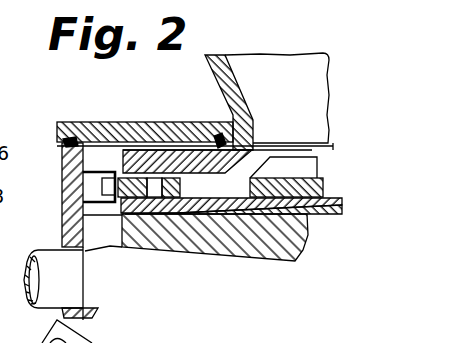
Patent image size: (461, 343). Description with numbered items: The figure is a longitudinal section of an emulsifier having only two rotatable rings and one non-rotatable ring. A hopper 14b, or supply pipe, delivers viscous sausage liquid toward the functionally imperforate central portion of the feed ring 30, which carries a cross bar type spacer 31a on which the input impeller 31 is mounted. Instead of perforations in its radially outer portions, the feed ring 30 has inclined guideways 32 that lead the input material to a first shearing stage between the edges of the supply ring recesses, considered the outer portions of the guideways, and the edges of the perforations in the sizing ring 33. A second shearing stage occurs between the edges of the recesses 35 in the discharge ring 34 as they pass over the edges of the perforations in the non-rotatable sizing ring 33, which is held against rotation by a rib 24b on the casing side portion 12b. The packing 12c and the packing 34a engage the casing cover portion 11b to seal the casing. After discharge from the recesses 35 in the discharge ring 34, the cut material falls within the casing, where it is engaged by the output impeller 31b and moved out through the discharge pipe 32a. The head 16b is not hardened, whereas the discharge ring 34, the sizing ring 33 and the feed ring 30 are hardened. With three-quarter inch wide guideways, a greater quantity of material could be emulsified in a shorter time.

The casing cover portion 11b is at (133, 133).
The hopper 14b is at (235, 78).
The packing 34a is at (219, 138).
The packing 12c is at (63, 141).
The casing side portion 12b is at (72, 229).
The sizing ring 33 is at (97, 189).
The rib 24b is at (97, 174).
The recesses 35 is at (119, 170).
The discharge ring 34 is at (180, 157).
The inclined guideways 32 is at (182, 199).
The feed ring 30 is at (332, 214).
The head 16b is at (261, 238).
The output impeller 31b is at (110, 228).
The input impeller 31 is at (307, 163).
The cross bar type spacer 31a is at (300, 189).
The discharge pipe 32a is at (70, 300).